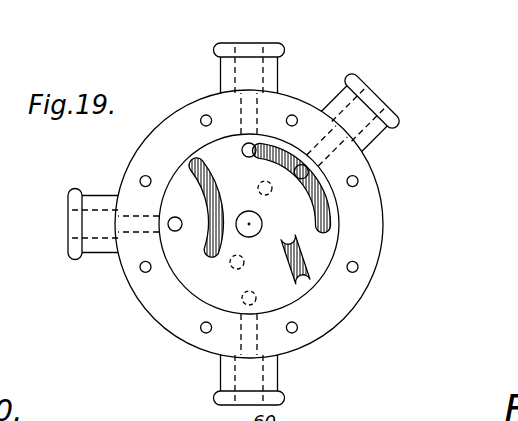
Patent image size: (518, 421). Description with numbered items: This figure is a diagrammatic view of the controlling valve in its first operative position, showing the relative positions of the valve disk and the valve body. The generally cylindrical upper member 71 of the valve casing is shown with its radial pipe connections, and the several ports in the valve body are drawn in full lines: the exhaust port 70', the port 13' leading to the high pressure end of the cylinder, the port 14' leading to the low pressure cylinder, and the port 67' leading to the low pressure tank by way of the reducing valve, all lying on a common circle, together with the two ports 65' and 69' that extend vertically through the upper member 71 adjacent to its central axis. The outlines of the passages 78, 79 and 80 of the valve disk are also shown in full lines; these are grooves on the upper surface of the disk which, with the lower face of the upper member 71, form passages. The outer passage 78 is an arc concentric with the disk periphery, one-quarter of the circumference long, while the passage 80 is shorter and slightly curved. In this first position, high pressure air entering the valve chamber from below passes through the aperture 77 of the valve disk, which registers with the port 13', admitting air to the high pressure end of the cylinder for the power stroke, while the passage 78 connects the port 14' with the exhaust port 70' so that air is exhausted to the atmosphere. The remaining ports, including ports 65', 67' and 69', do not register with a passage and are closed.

The upper member of the valve casing 71 is at (131, 156).
The exhaust port 70' is at (249, 91).
The port leading to the high pressure end of the cylinder 13' is at (104, 224).
The port leading to the low pressure cylinder 14' is at (342, 143).
The port of the valve disk 77 is at (173, 232).
The outer passage 78 is at (329, 200).
The passage 79 is at (301, 251).
The passage 80 is at (205, 251).
The port 69' is at (251, 193).
The port 65' is at (251, 269).
The port 67' is at (244, 343).